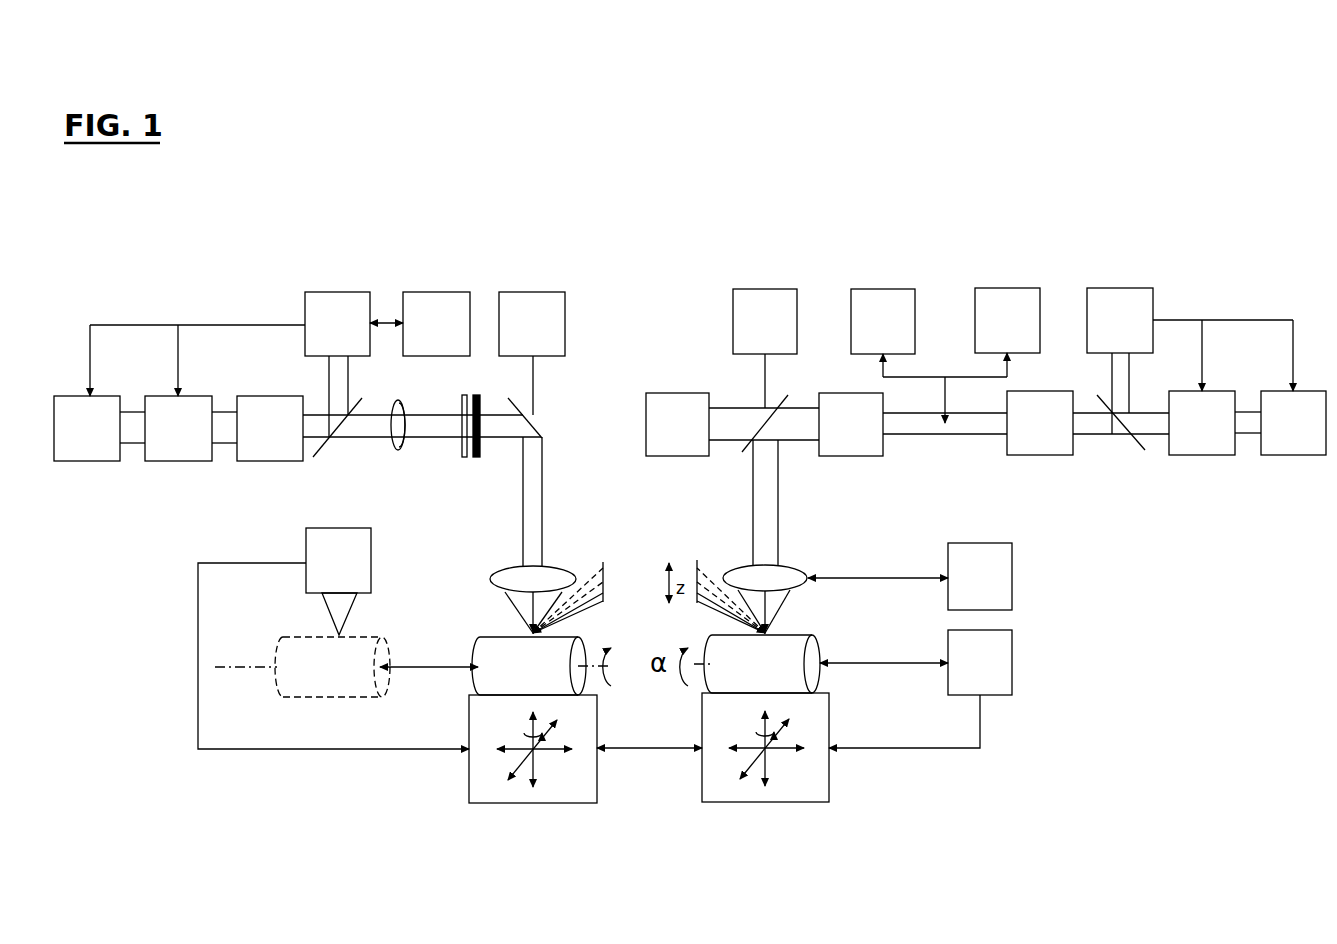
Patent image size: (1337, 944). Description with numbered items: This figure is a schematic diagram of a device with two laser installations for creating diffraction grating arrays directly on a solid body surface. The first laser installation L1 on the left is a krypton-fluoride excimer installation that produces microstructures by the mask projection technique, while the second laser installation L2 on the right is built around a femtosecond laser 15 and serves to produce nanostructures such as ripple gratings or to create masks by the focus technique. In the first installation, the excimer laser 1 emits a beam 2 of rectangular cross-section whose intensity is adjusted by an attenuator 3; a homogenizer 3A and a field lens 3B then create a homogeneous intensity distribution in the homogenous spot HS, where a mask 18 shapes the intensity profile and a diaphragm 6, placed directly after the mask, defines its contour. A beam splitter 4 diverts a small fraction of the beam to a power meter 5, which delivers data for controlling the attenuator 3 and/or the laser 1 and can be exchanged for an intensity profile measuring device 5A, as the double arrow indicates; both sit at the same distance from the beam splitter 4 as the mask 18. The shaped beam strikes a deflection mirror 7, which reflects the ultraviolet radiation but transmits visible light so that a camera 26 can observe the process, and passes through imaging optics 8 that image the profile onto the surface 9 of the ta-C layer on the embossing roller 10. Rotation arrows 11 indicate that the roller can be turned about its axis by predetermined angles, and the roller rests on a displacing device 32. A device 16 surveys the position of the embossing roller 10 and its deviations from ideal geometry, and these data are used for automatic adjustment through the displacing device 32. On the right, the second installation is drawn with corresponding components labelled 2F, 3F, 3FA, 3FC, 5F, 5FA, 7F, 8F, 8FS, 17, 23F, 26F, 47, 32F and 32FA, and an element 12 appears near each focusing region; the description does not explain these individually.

The first laser installation L1 is at (197, 274).
The second laser installation L2 is at (1223, 269).
The excimer laser 1 is at (87, 465).
The beam 2 is at (132, 473).
The attenuator 3 is at (178, 465).
The homogenizer 3A is at (270, 465).
The field lens 3B is at (382, 459).
The beam splitter 4 is at (337, 458).
The power meter 5 is at (337, 316).
The laser beam intensity profile measuring device 5A is at (446, 275).
The homogenous spot HS is at (422, 316).
The mask 18 is at (440, 456).
The diaphragm 6 is at (487, 456).
The camera 26 is at (532, 305).
The deflection mirror 7 is at (554, 412).
The imaging optics 8 is at (543, 567).
The surface 9 is at (608, 607).
The embossing roller 10 is at (558, 667).
The rotation arrows 11 is at (645, 690).
The sensor plate 12 is at (649, 574).
The device for the position survey of the embossing roller 16 is at (380, 581).
The displacing device 32 is at (533, 792).
The second positioning stage 32F is at (768, 790).
The stage drive unit 32FA is at (979, 689).
The second control unit 5FA is at (650, 376).
The second beam splitter mirror 7F is at (725, 374).
The second detector 26F is at (767, 300).
The measuring unit 23F is at (883, 273).
The beam shaping unit 3FC is at (868, 455).
The beam expander 3FA is at (1007, 273).
The control unit 5F is at (1120, 313).
The deflection mirror 47 is at (1123, 471).
The attenuator 17 is at (1052, 469).
The beam forming unit 3F is at (1202, 470).
The second laser beam 2F is at (1254, 482).
The femtosecond laser 15 is at (1295, 471).
The second focusing lens 8F is at (749, 565).
The lens adjusting unit 8FS is at (1029, 586).